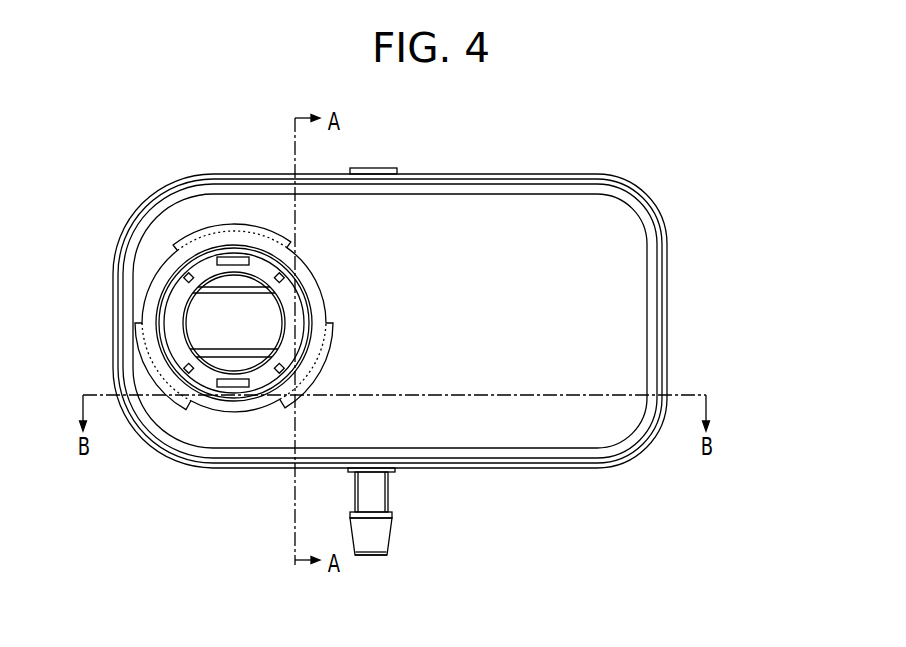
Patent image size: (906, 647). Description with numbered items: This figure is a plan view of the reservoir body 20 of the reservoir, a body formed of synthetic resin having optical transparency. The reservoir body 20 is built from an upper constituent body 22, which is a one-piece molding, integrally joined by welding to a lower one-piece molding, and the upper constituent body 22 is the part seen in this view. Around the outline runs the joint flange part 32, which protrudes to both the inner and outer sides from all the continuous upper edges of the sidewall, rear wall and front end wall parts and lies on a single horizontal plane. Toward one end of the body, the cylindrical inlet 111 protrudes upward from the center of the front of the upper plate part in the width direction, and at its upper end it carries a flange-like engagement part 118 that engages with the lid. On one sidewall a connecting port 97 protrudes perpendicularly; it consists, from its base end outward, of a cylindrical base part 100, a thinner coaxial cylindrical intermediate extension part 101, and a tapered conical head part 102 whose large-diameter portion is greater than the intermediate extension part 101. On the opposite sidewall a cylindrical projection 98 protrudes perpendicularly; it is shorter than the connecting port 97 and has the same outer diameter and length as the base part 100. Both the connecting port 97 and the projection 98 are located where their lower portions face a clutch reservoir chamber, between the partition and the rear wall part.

The reservoir body 20 is at (426, 283).
The upper constituent body 22 is at (652, 229).
The joint flange part 32 is at (668, 297).
The projection 98 is at (370, 168).
The connecting port 97 is at (375, 556).
The base part 100 is at (392, 473).
The intermediate extension part 101 is at (382, 497).
The head part 102 is at (392, 533).
The inlet 111 is at (177, 302).
The engagement part 118 is at (191, 240).